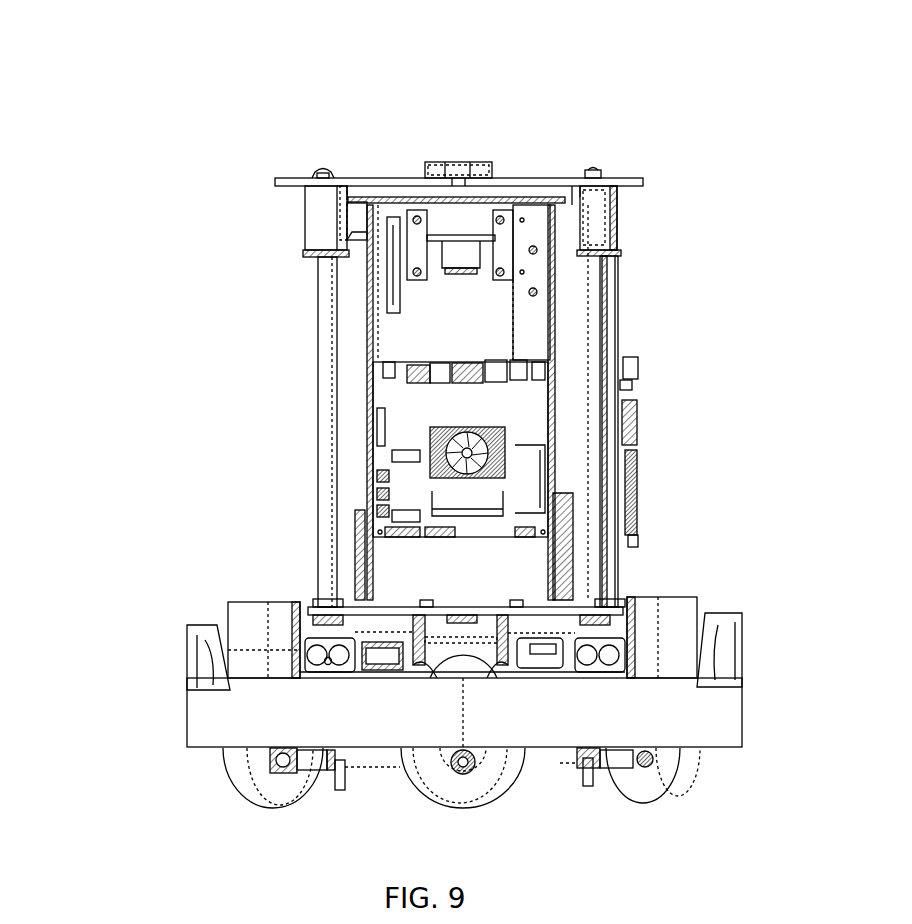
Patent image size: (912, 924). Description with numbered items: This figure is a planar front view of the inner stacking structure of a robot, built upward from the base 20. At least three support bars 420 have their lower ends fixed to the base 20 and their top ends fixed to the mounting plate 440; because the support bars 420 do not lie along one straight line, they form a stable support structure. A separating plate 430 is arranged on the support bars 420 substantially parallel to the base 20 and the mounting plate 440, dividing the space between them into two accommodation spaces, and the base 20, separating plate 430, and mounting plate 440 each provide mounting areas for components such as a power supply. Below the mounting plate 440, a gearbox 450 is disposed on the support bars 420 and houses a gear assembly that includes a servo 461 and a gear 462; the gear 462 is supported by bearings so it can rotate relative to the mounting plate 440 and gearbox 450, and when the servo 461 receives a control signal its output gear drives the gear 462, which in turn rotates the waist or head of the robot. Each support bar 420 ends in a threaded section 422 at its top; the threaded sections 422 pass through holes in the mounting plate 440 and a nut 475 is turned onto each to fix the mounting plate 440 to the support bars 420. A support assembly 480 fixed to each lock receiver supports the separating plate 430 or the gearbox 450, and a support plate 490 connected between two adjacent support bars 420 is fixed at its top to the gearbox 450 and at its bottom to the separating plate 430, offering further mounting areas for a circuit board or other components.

The base 20 is at (250, 728).
The support bars 420 is at (320, 462).
The threaded section 422 is at (323, 173).
The separating plate 430 is at (363, 603).
The mounting plate 440 is at (530, 181).
The gearbox 450 is at (597, 233).
The servo 461 is at (457, 258).
The gear 462 is at (455, 170).
The nut 475 is at (597, 173).
The support assembly 480 is at (612, 262).
The support plate 490 is at (533, 332).